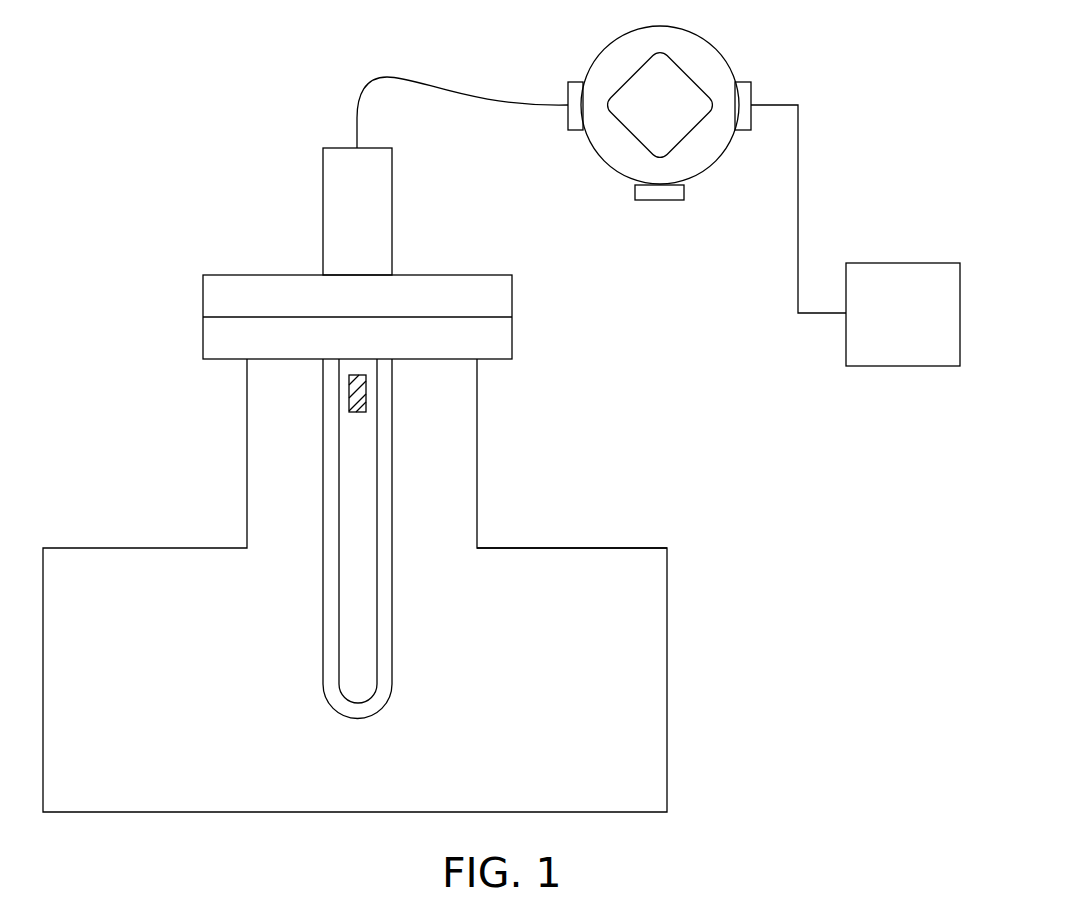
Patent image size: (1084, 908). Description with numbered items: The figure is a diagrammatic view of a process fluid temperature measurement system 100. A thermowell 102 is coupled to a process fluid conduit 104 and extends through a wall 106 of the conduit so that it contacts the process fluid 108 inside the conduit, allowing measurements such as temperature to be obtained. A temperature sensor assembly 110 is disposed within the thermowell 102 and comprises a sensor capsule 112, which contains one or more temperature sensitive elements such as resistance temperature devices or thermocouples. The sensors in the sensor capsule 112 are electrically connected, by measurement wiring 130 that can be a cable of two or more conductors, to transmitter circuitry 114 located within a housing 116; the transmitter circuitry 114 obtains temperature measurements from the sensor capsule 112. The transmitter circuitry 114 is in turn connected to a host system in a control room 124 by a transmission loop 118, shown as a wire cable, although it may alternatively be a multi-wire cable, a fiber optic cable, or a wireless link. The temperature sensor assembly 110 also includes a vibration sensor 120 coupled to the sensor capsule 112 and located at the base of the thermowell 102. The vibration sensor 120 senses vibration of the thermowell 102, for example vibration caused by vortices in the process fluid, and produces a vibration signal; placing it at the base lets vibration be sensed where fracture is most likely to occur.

The process fluid temperature measurement system 100 is at (160, 173).
The thermowell 102 is at (393, 467).
The process fluid conduit 104 is at (668, 715).
The wall 106 is at (612, 548).
The process fluid 108 is at (58, 634).
The temperature sensor assembly 110 is at (330, 570).
The sensor capsule 112 is at (377, 568).
The transmitter circuitry 114 is at (688, 57).
The housing 116 is at (710, 167).
The transmission loop 118 is at (798, 234).
The vibration sensor 120 is at (349, 402).
The control room 124 is at (889, 349).
The measurement wiring 130 is at (478, 100).